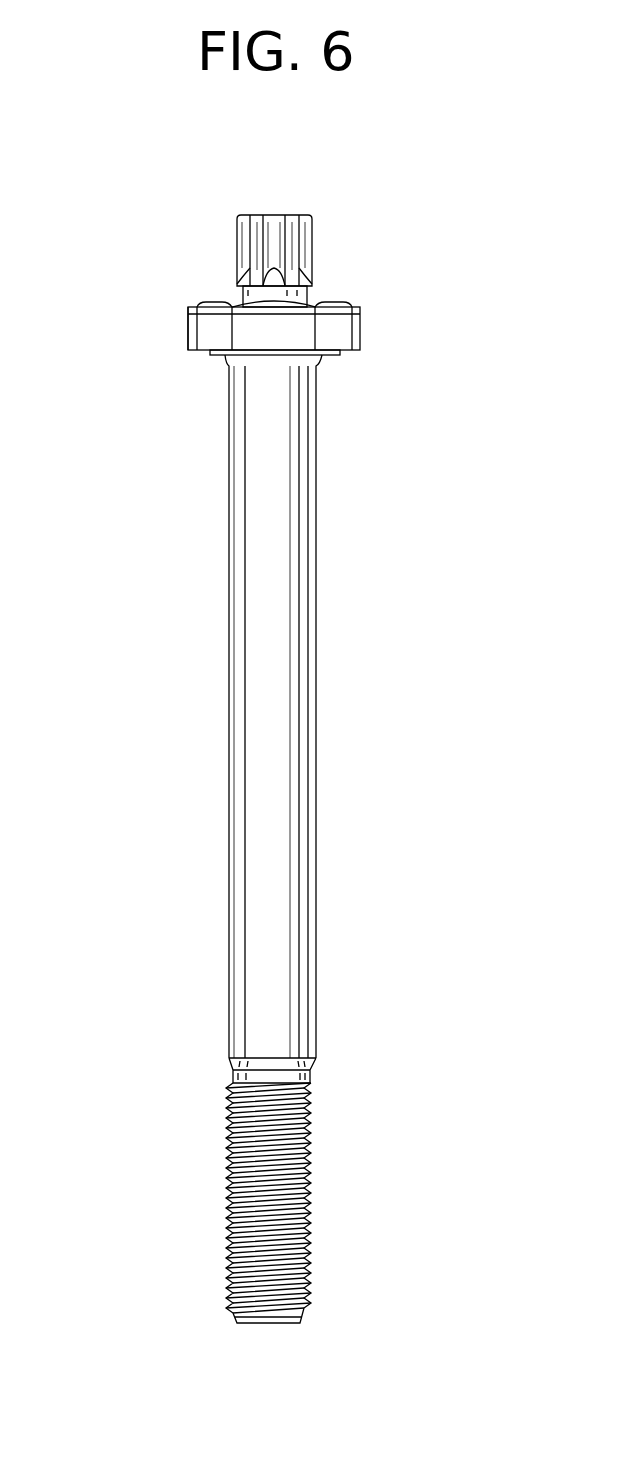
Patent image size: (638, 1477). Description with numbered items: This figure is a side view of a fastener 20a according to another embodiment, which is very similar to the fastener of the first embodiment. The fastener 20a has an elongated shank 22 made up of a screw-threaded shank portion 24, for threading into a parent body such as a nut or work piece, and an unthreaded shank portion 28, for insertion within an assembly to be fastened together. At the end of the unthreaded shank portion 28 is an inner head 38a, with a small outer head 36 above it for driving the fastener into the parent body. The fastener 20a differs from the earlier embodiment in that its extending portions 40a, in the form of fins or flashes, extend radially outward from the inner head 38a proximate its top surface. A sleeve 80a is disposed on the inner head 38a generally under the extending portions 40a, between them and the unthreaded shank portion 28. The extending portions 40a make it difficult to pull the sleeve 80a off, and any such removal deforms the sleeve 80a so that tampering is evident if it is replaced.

The fastener 20a is at (418, 536).
The outer head 36 is at (307, 215).
The extending portions 40a is at (218, 302).
The inner head 38a is at (386, 338).
The sleeve 80a is at (189, 326).
The elongated shank 22 is at (200, 938).
The unthreaded shank portion 28 is at (316, 505).
The screw-threaded shank portion 24 is at (309, 1212).